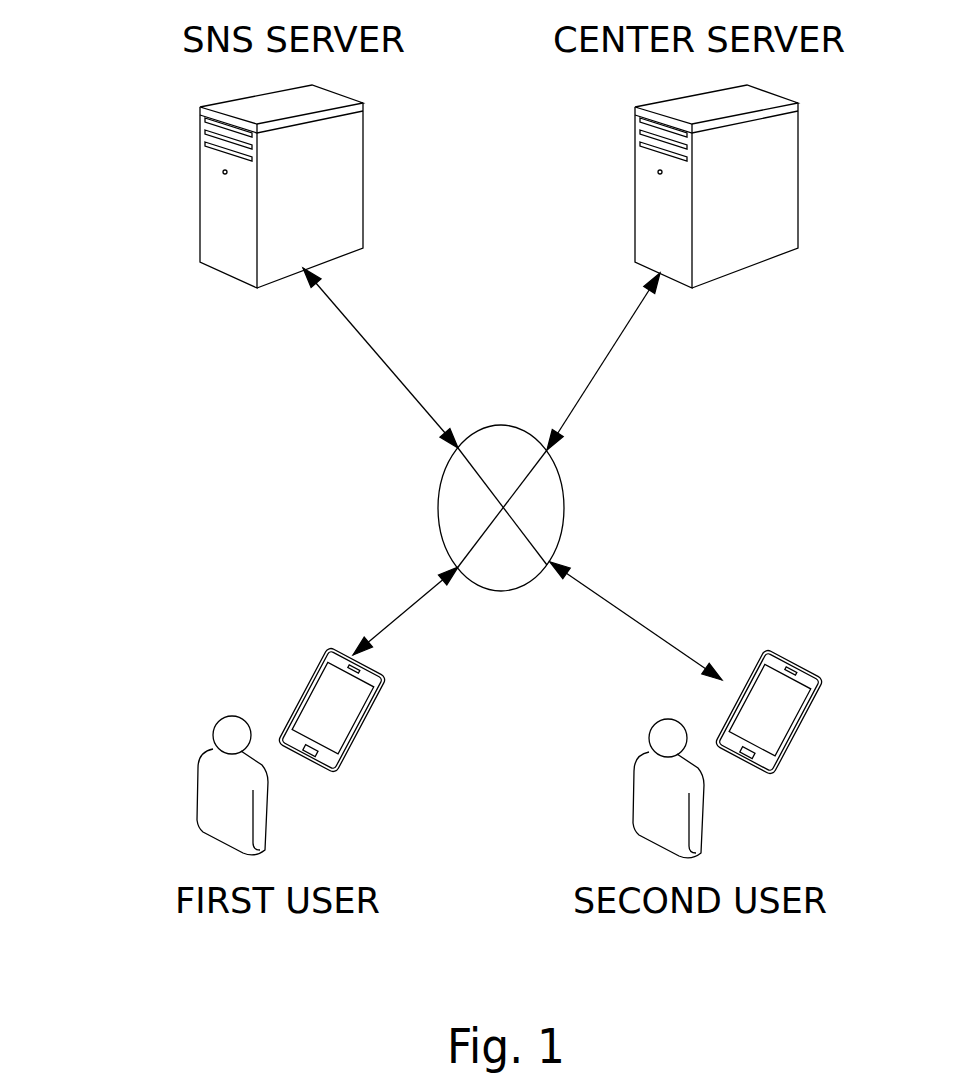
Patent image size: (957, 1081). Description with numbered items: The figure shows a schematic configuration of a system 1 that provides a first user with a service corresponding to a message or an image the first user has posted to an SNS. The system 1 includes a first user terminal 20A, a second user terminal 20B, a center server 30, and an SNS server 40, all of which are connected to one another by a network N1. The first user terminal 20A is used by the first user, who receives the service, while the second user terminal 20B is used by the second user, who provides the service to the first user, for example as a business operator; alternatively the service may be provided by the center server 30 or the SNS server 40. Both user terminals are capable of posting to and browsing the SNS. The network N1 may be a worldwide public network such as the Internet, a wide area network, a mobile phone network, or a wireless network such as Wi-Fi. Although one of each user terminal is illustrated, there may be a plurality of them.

The system 1 is at (715, 430).
The first user terminal 20A is at (332, 683).
The second user terminal 20B is at (768, 685).
The center server 30 is at (650, 193).
The SNS server 40 is at (215, 195).
The network N1 is at (533, 582).